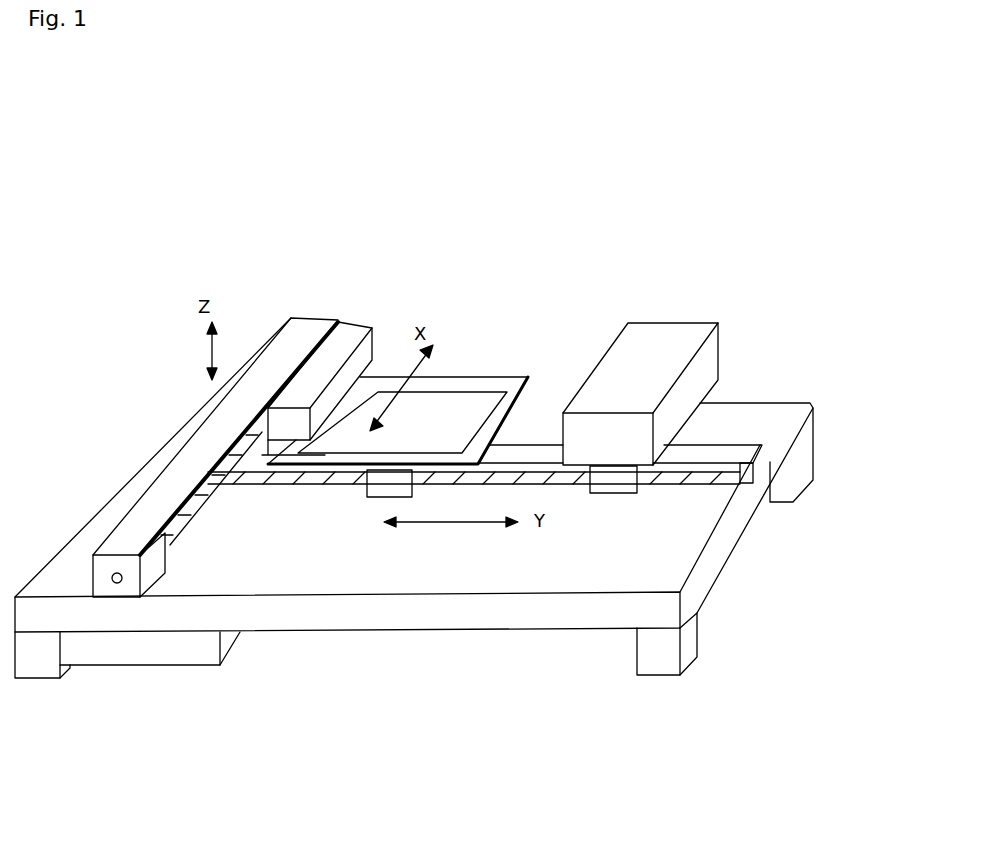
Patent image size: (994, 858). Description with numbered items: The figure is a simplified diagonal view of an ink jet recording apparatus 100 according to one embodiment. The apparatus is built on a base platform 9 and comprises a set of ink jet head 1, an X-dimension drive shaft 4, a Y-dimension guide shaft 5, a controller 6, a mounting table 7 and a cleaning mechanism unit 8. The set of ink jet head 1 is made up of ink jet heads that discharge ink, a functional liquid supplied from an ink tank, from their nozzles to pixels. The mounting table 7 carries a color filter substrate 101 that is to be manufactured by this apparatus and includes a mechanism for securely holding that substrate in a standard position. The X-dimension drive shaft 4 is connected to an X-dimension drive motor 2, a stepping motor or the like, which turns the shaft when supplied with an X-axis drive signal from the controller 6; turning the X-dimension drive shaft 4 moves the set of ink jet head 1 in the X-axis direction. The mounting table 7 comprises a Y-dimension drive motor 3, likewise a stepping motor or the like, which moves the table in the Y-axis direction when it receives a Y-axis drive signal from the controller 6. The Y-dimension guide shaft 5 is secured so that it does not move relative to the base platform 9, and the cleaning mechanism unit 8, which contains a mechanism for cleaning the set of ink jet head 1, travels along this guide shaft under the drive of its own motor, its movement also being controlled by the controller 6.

The set of ink jet head 1 is at (363, 325).
The X-dimension drive motor 2 is at (93, 577).
The Y-dimension drive motor 3 is at (367, 490).
The X-dimension drive shaft 4 is at (195, 513).
The Y-dimension guide shaft 5 is at (700, 482).
The controller 6 is at (232, 645).
The mounting table 7 is at (413, 402).
The cleaning mechanism unit 8 is at (680, 323).
The base platform 9 is at (790, 403).
The ink jet recording apparatus 100 is at (399, 678).
The color filter substrate 101 is at (461, 391).